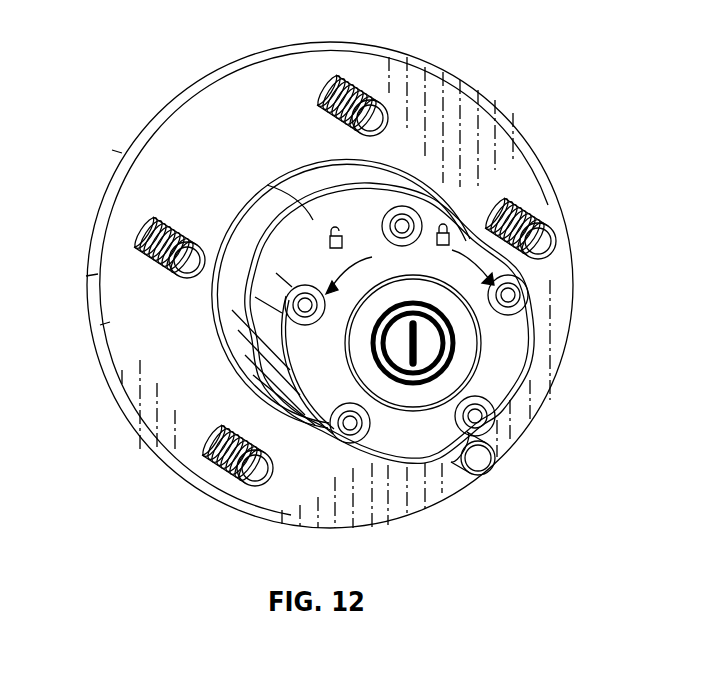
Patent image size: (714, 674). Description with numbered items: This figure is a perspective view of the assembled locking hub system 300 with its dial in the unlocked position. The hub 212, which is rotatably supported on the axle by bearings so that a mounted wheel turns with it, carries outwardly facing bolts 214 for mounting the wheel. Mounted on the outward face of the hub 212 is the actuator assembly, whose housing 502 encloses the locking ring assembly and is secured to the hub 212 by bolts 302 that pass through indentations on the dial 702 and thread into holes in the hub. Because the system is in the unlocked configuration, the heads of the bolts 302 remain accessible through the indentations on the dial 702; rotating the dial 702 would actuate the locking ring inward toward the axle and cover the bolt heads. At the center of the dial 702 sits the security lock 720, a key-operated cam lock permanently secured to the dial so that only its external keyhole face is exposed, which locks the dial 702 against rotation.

The locking hub system 300 is at (108, 47).
The hub 212 is at (492, 102).
The bolts 214 is at (147, 237).
The housing 502 is at (267, 185).
The bolts 302 is at (287, 312).
The dial 702 is at (415, 440).
The security lock 720 is at (427, 347).